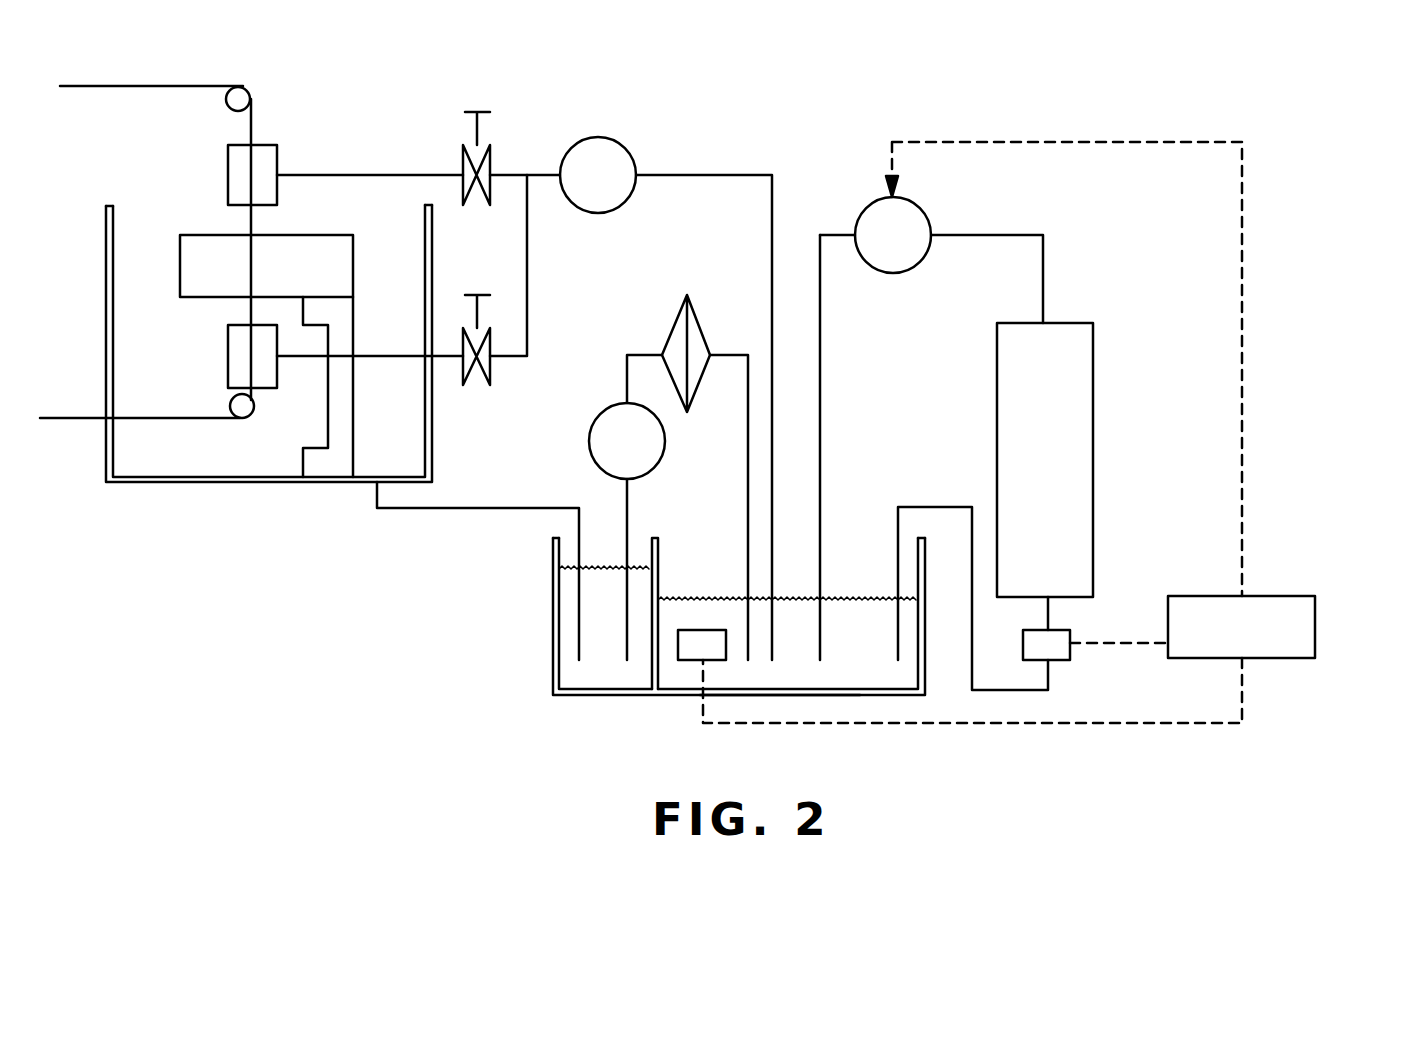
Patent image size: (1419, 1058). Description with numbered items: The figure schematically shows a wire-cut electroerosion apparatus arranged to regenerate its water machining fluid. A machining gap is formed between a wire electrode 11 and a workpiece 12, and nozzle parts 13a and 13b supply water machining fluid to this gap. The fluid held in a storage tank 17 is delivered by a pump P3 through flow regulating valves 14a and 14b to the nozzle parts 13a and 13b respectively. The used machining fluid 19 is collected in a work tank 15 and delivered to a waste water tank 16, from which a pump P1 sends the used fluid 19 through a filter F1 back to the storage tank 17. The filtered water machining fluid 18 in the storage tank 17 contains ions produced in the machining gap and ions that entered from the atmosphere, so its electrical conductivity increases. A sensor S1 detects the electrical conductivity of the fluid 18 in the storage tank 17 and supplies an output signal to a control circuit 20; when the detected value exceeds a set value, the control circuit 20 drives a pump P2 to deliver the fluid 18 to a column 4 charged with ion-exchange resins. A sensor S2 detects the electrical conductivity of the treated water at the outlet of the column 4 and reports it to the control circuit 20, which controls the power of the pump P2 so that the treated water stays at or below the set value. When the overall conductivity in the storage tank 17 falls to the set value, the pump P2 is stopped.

The wire electrode 11 is at (153, 86).
The workpiece 12 is at (190, 297).
The nozzle part 13a is at (268, 158).
The nozzle part 13b is at (268, 378).
The flow regulating valve 14a is at (492, 158).
The flow regulating valve 14b is at (490, 373).
The work tank 15 is at (147, 482).
The waste water tank 16 is at (553, 663).
The storage tank 17 is at (782, 693).
The filtered water machining fluid 18 is at (878, 672).
The used machining fluid 19 is at (608, 665).
The control circuit 20 is at (1315, 617).
The column 4 is at (1093, 368).
The pump P1 is at (627, 531).
The pump P2 is at (931, 428).
The pump P3 is at (598, 175).
The filter F1 is at (687, 295).
The sensor S1 is at (690, 665).
The sensor S2 is at (1060, 653).